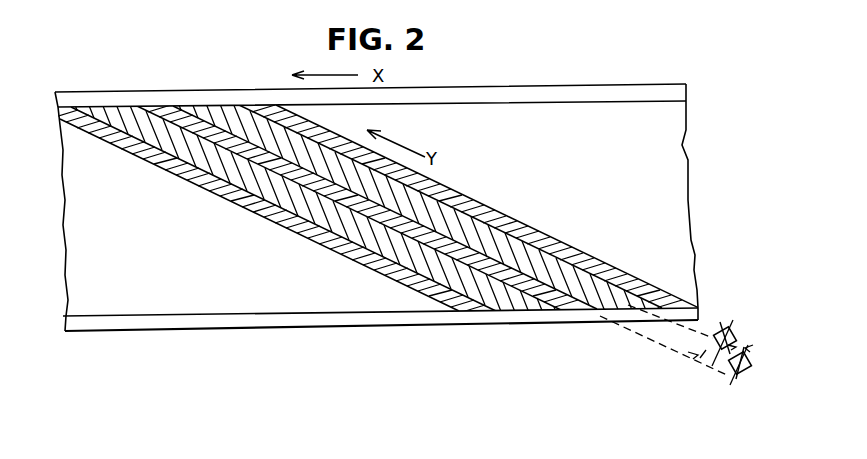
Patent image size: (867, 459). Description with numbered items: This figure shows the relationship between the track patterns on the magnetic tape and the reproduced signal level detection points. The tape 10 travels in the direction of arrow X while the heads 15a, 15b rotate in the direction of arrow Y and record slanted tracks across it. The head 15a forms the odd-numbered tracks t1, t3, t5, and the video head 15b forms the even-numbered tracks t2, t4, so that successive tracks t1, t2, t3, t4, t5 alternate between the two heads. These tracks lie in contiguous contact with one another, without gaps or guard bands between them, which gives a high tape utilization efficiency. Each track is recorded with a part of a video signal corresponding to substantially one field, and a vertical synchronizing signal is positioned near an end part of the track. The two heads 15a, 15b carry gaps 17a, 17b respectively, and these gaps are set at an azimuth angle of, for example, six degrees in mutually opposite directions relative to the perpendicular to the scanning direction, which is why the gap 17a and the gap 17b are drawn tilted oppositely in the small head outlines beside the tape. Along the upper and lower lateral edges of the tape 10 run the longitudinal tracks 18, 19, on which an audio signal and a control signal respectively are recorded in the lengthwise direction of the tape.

The tape 10 is at (690, 155).
The track 18 is at (557, 86).
The track 19 is at (332, 328).
The track t1 is at (459, 301).
The track t2 is at (507, 301).
The track t3 is at (553, 301).
The track t4 is at (594, 301).
The track t5 is at (650, 300).
The head 15a is at (719, 329).
The video head 15b is at (731, 368).
The gap 17a is at (731, 333).
The gap 17b is at (740, 374).